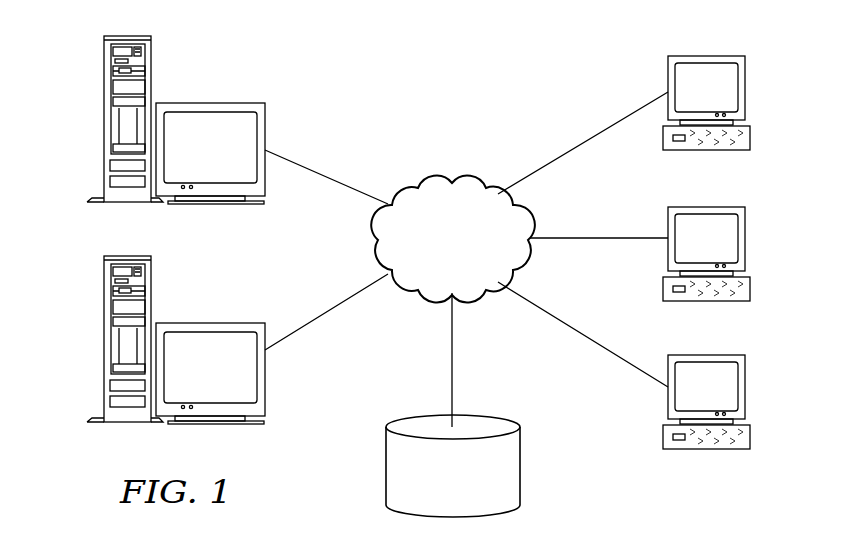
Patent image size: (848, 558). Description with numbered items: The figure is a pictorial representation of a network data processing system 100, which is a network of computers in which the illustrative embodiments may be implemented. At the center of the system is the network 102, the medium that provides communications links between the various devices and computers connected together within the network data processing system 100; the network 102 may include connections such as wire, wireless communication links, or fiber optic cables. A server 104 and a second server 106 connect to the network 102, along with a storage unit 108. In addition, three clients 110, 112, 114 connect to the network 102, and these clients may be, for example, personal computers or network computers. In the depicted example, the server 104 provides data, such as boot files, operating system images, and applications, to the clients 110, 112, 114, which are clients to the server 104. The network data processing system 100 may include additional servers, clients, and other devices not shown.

The network data processing system 100 is at (342, 102).
The network 102 is at (421, 187).
The server 104 is at (103, 114).
The server 106 is at (103, 345).
The storage unit 108 is at (418, 416).
The client 110 is at (745, 89).
The client 112 is at (745, 240).
The client 114 is at (745, 388).